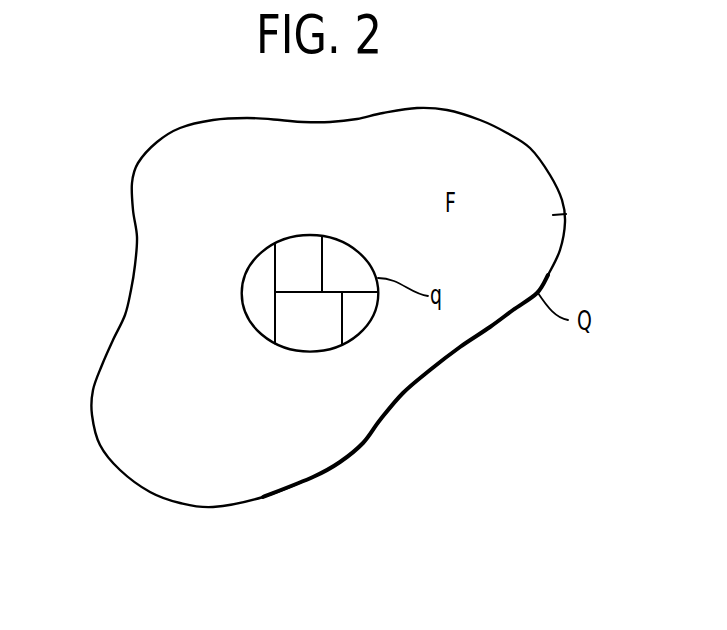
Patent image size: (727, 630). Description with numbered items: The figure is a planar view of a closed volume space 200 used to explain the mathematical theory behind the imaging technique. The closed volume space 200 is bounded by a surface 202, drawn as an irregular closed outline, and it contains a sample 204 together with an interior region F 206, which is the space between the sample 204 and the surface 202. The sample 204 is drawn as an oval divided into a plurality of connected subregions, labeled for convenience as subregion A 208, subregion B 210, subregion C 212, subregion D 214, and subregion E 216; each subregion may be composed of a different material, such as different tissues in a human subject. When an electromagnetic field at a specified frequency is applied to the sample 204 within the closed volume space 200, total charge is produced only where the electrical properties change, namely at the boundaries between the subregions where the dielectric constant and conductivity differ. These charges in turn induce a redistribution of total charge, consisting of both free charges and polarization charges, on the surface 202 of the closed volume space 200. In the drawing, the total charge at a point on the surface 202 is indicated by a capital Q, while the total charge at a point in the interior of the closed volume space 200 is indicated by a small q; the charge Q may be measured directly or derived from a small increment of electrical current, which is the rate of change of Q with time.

The closed volume space 200 is at (78, 150).
The surface 202 is at (527, 141).
The sample 204 is at (257, 328).
The interior region F 206 is at (560, 215).
The subregion A 208 is at (265, 270).
The subregion B 210 is at (316, 251).
The subregion C 212 is at (364, 268).
The subregion D 214 is at (302, 342).
The subregion E 216 is at (364, 326).